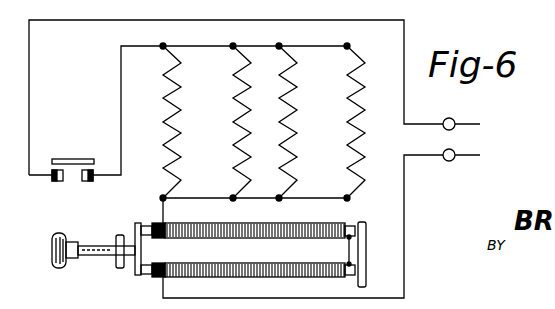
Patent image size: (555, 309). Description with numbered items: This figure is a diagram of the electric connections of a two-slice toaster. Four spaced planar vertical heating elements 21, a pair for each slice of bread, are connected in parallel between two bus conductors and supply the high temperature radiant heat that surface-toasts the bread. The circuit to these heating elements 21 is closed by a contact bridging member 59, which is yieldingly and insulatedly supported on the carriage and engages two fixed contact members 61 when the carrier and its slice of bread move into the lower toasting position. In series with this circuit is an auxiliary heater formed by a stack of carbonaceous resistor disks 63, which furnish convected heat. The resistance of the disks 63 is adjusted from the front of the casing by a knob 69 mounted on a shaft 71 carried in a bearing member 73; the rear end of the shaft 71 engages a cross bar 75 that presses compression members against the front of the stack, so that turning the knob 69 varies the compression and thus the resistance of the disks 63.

The heating elements 21 is at (228, 148).
The contact bridging member 59 is at (70, 158).
The fixed contact members 61 is at (83, 182).
The resistor disks 63 is at (238, 262).
The knob 69 is at (57, 268).
The shaft 71 is at (86, 246).
The bearing member 73 is at (119, 269).
The cross bar 75 is at (138, 223).